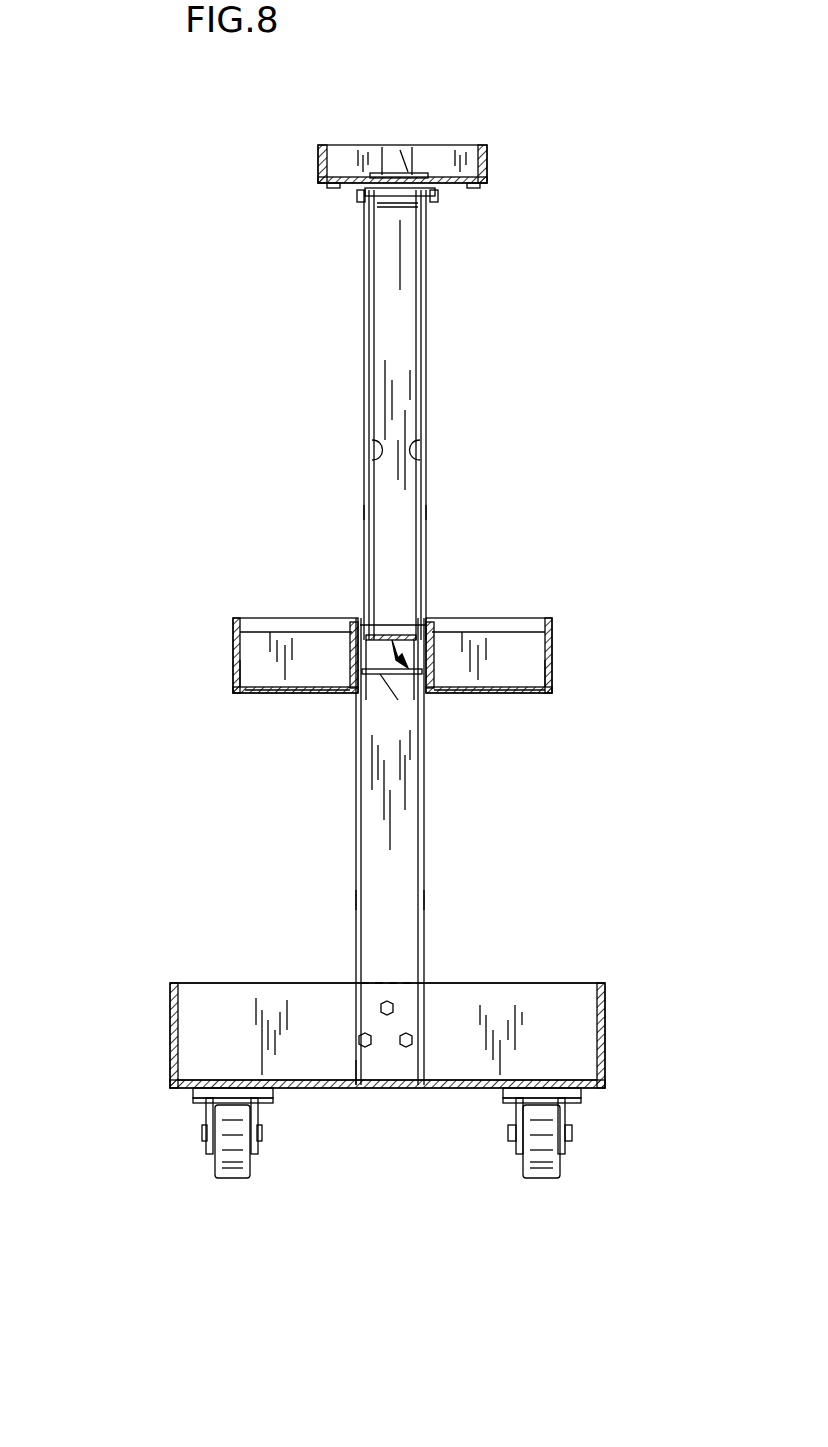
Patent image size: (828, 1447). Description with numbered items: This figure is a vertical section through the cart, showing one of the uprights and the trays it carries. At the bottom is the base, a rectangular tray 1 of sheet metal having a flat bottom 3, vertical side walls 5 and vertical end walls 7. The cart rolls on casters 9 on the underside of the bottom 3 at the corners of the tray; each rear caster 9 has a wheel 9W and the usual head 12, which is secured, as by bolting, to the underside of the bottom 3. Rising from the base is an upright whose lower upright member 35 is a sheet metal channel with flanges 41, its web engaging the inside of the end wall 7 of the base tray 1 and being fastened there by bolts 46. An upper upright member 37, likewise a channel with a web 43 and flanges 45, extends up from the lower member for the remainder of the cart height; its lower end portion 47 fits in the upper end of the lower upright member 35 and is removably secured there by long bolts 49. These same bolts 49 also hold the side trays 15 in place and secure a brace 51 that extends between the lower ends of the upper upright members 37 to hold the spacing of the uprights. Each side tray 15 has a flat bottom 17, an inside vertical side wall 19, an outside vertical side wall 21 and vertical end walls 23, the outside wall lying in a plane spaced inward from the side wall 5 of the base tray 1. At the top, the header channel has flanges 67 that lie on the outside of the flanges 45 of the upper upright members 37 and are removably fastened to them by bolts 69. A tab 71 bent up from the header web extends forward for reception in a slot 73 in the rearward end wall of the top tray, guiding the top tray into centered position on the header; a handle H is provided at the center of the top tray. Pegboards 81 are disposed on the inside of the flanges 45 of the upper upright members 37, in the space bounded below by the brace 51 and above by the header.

The rectangular tray 1 is at (170, 980).
The flat bottom 3 is at (358, 1085).
The vertical side walls 5 is at (172, 1012).
The vertical end walls 7 is at (462, 1068).
The rear casters 9 is at (478, 106).
The wheel 9W is at (238, 1180).
The head 12 is at (262, 1092).
The side trays 15 is at (232, 615).
The flat bottom 17 is at (294, 692).
The inside vertical side wall 19 is at (346, 668).
The outside vertical side wall 21 is at (232, 673).
The vertical end walls 23 is at (320, 635).
The lower upright member 35 is at (355, 855).
The upper upright member 37 is at (364, 312).
The flanges 41 is at (355, 898).
The web 43 is at (402, 400).
The flanges 45 is at (366, 510).
The bolts 46 is at (388, 1016).
The lower end portion 47 is at (380, 668).
The long bolts 49 is at (430, 630).
The brace 51 is at (396, 668).
The flanges 67 is at (357, 196).
The bolts 69 is at (440, 200).
The tab 71 is at (380, 168).
The slot 73 is at (430, 172).
The pegboards 81 is at (372, 452).
The handle H is at (405, 160).